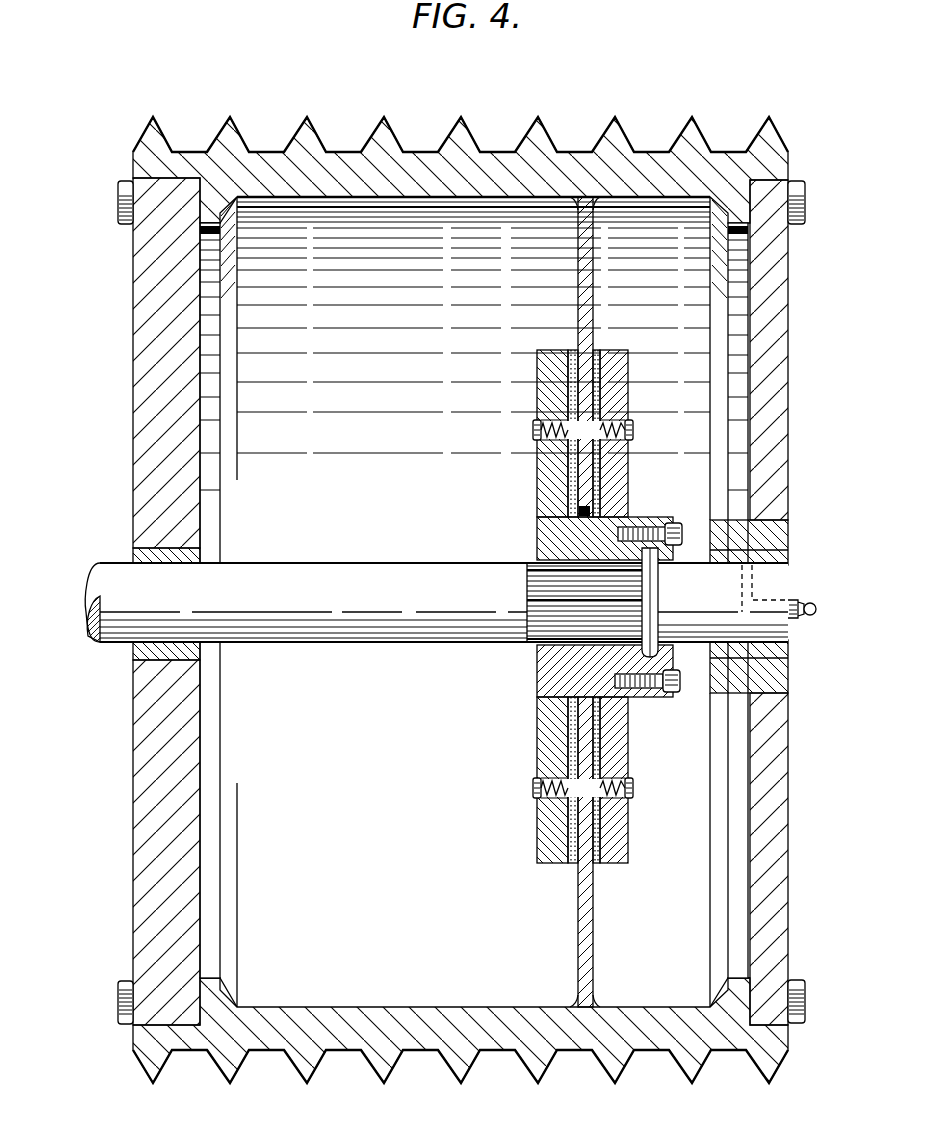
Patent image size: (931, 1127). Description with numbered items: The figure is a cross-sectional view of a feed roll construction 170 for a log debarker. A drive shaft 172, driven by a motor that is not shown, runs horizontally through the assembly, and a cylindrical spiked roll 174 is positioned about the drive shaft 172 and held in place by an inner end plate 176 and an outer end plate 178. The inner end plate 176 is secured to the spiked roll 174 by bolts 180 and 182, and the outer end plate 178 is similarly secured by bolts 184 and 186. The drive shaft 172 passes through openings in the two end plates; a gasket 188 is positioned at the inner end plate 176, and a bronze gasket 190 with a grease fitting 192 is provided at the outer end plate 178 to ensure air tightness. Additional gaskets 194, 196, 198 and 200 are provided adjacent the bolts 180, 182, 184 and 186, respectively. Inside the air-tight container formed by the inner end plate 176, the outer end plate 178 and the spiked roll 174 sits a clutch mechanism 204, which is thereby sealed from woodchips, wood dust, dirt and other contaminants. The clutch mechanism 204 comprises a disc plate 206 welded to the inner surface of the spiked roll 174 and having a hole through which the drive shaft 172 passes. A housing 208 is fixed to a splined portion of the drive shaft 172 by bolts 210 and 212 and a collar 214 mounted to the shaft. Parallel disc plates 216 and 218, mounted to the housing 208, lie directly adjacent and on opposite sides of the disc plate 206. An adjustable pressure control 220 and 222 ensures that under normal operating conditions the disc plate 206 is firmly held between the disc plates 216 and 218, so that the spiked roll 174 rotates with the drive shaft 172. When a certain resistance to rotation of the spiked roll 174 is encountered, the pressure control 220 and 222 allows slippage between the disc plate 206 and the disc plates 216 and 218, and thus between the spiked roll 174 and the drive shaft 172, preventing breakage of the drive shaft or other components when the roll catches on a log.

The feed roll construction 170 is at (93, 815).
The drive shaft 172 is at (470, 562).
The cylindrical spiked roll 174 is at (533, 140).
The inner end plate 176 is at (140, 713).
The outer end plate 178 is at (782, 747).
The bolt 180 is at (126, 222).
The bolt 182 is at (127, 1022).
The bolt 184 is at (806, 205).
The bolt 186 is at (804, 985).
The gasket 188 is at (138, 556).
The bronze gasket 190 is at (790, 560).
The grease fitting 192 is at (813, 614).
The gasket 194 is at (203, 202).
The gasket 196 is at (197, 998).
The gasket 198 is at (713, 225).
The gasket 200 is at (747, 1005).
The clutch mechanism 204 is at (515, 720).
The disc plate 206 is at (578, 293).
The housing 208 is at (632, 518).
The bolt 210 is at (680, 536).
The bolt 212 is at (670, 696).
The collar 214 is at (658, 593).
The disc plate 216 is at (540, 470).
The disc plate 218 is at (617, 463).
The adjustable pressure control 220 is at (605, 412).
The adjustable pressure control 222 is at (568, 812).